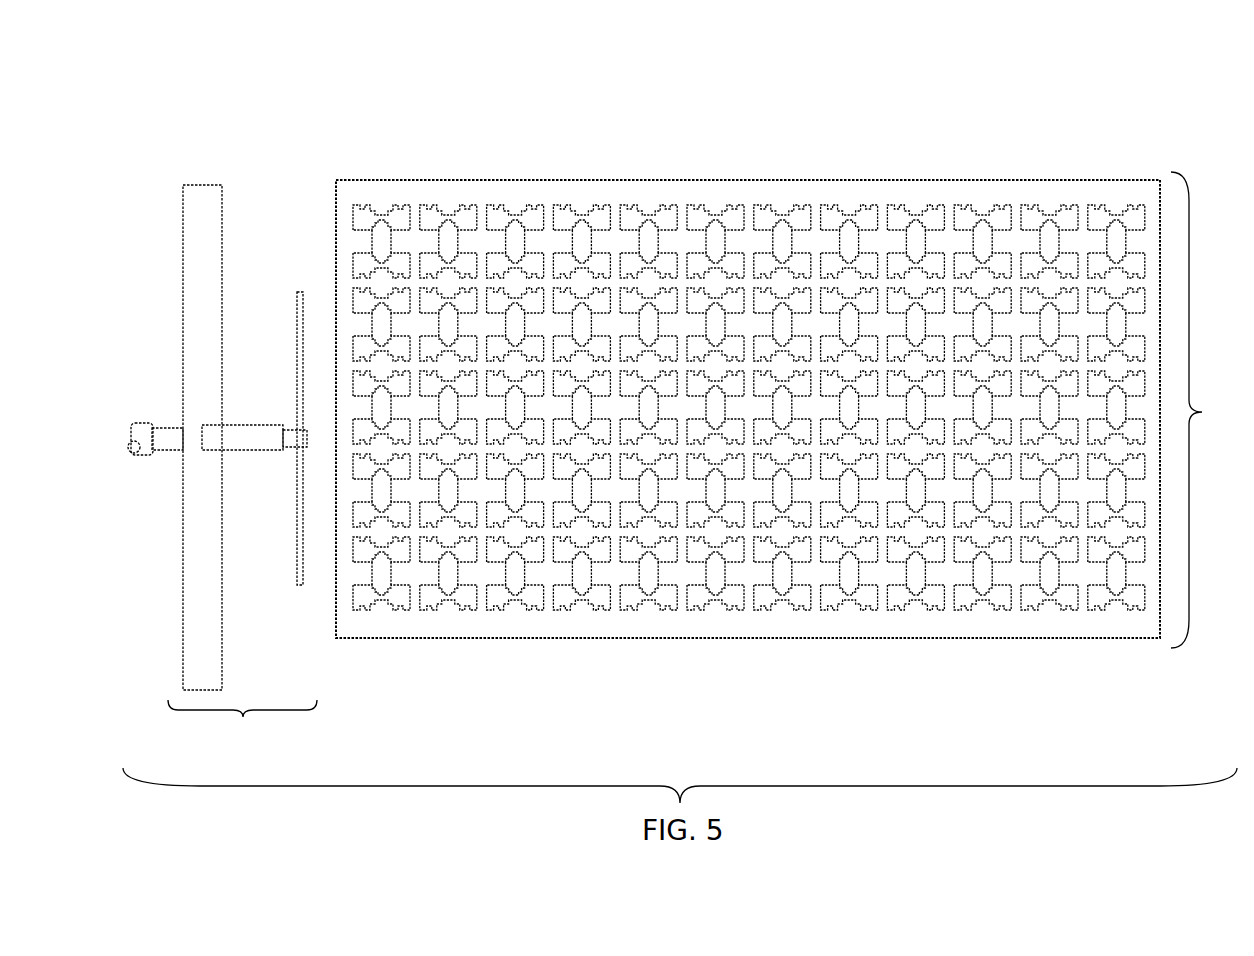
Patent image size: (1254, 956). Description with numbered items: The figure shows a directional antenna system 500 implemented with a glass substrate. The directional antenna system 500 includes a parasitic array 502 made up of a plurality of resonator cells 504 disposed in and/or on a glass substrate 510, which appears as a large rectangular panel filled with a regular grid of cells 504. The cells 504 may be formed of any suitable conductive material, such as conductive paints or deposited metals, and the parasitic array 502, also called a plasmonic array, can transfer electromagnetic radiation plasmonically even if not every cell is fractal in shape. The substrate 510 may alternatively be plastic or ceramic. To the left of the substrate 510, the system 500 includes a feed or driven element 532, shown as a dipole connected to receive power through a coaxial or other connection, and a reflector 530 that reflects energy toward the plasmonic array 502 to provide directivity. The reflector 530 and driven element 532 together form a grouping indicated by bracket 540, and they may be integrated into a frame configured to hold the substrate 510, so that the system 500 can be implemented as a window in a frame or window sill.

The directional antenna system 500 is at (247, 73).
The parasitic array 502 is at (788, 410).
The resonator cells 504 is at (382, 575).
The glass substrate 510 is at (955, 178).
The reflector 530 is at (183, 225).
The driven element 532 is at (297, 570).
The mounting assembly 540 is at (222, 588).